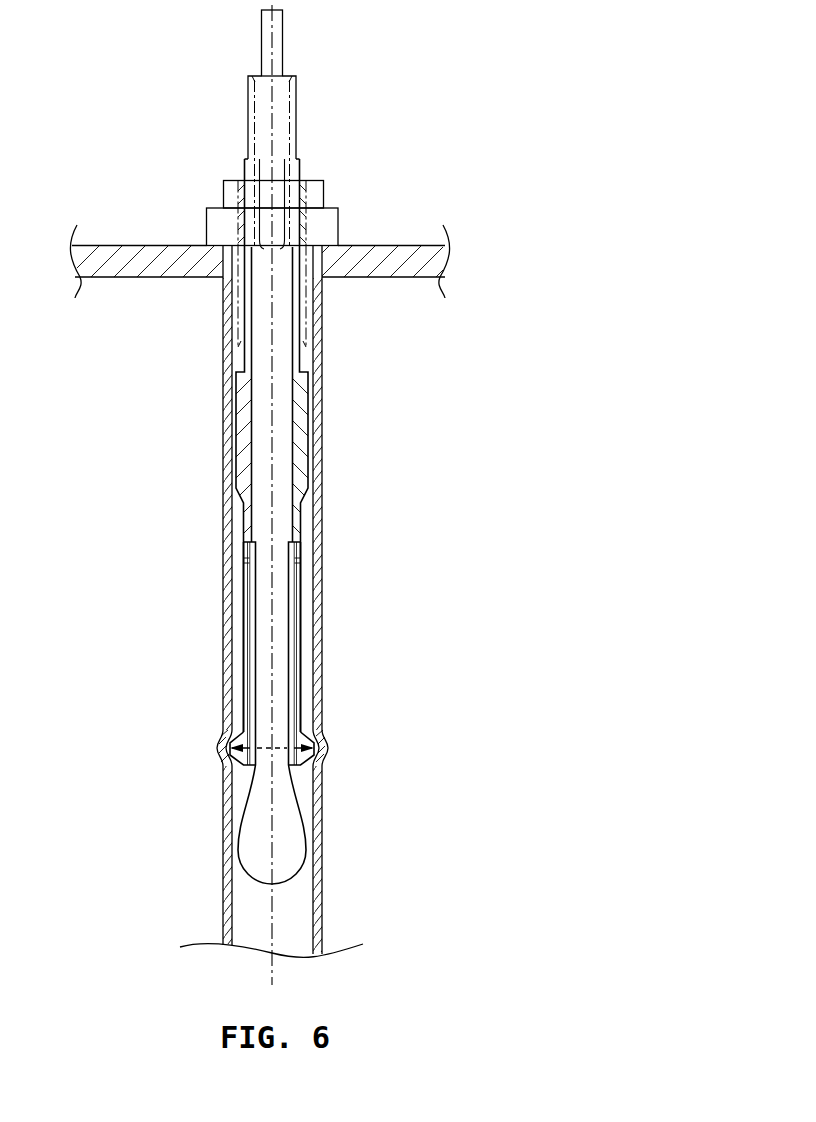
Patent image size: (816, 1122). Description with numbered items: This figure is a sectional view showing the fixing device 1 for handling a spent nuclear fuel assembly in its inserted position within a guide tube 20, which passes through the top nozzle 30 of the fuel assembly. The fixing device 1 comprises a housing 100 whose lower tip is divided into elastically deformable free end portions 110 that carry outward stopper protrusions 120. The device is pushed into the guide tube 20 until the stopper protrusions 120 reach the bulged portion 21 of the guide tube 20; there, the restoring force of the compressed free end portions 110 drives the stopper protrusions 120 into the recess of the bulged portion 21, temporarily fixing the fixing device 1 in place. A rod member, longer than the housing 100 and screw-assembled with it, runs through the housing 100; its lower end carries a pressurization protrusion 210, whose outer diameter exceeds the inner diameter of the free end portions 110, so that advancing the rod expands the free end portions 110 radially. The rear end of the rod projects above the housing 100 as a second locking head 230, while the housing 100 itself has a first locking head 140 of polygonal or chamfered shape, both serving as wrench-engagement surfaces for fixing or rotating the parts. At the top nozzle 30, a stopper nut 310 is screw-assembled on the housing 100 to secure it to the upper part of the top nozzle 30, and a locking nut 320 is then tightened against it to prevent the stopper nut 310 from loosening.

The fixing device 1 is at (324, 126).
The guide tube 20 is at (227, 333).
The bulged portion 21 is at (222, 748).
The top nozzle 30 is at (105, 246).
The housing 100 is at (298, 454).
The free end portions 110 is at (244, 689).
The stopper protrusions 120 is at (314, 758).
The first locking head 140 is at (247, 125).
The pressurization protrusion 210 is at (255, 840).
The second locking head 230 is at (283, 33).
The stopper nut 310 is at (338, 226).
The locking nut 320 is at (330, 187).